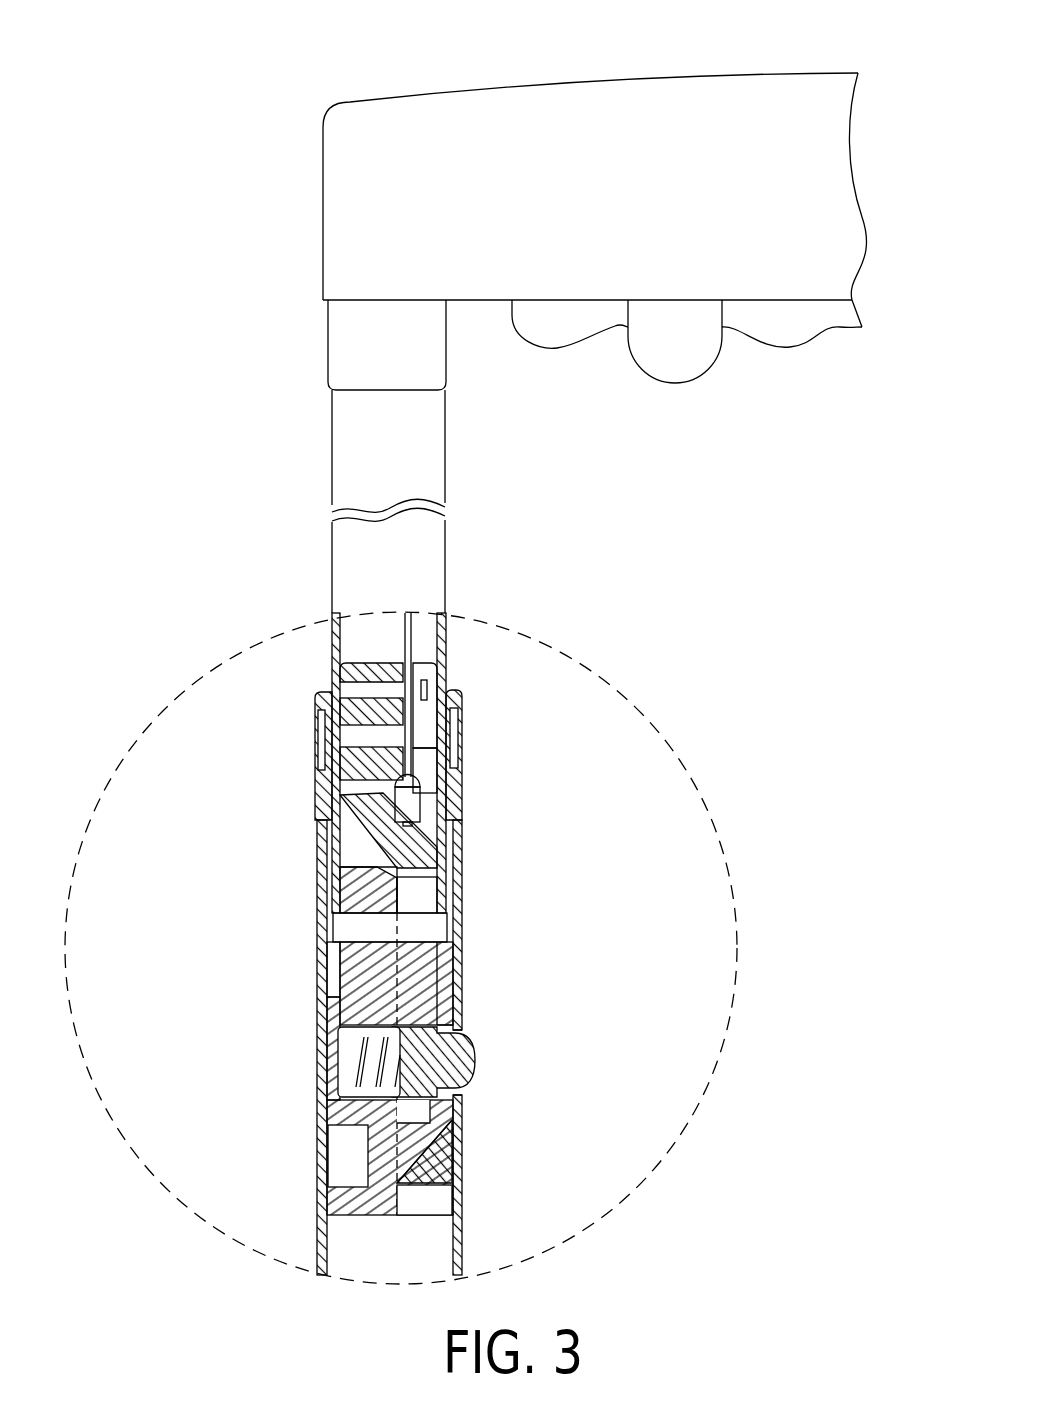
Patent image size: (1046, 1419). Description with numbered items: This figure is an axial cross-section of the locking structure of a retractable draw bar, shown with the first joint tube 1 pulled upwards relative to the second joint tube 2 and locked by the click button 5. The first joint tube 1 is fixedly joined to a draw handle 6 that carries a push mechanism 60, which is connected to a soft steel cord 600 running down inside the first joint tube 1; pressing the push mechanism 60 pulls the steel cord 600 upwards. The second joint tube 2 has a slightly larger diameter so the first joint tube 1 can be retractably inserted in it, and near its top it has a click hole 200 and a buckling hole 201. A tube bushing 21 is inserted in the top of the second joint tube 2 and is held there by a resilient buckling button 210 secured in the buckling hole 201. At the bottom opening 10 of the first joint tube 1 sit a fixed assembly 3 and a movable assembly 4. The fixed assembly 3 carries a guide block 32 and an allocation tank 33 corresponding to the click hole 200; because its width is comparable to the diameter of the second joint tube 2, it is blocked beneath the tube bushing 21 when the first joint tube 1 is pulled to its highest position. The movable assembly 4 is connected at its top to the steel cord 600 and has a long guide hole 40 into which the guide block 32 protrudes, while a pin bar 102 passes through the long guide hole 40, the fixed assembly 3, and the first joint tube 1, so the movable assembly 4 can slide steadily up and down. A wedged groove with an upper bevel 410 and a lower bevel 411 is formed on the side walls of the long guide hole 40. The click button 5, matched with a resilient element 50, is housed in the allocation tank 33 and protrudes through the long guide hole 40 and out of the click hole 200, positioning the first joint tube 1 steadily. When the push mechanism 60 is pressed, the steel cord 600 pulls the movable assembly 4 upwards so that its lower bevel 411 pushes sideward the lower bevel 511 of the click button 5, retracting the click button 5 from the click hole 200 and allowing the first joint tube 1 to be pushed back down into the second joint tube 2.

The draw handle 6 is at (659, 93).
The push mechanism 60 is at (683, 358).
The steel cord 600 is at (410, 633).
The first joint tube 1 is at (330, 642).
The bottom opening 10 is at (330, 983).
The pin bar 102 is at (445, 925).
The second joint tube 2 is at (320, 920).
The tube bushing 21 is at (454, 697).
The resilient buckling button 210 is at (457, 783).
The buckling hole 201 is at (457, 817).
The click hole 200 is at (465, 1100).
The fixed assembly 3 is at (330, 1010).
The guide block 32 is at (455, 953).
The allocation tank 33 is at (330, 1090).
The movable assembly 4 is at (440, 885).
The long guide hole 40 is at (445, 1000).
The upper bevel 410 is at (533, 1014).
The lower bevel 411 is at (510, 1146).
The lower bevel 511 is at (462, 1110).
The click button 5 is at (473, 1048).
The resilient element 50 is at (328, 1062).